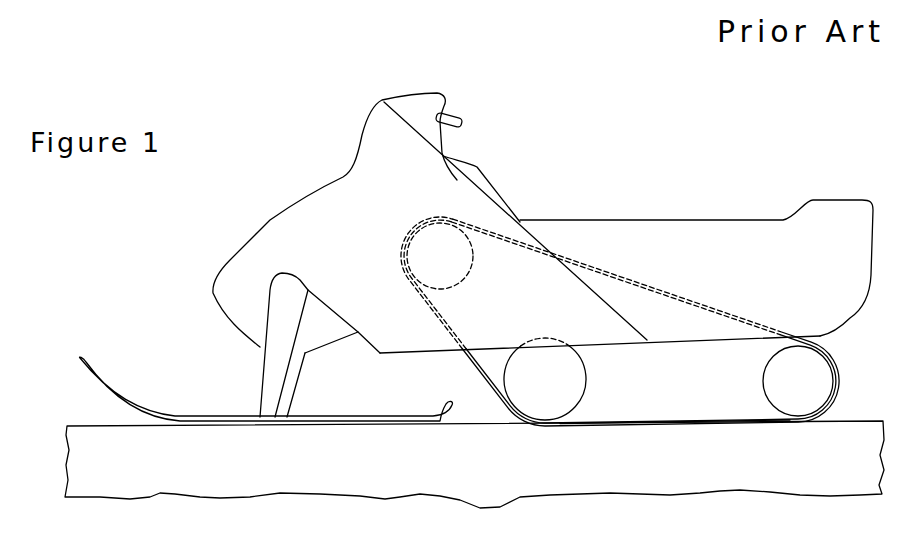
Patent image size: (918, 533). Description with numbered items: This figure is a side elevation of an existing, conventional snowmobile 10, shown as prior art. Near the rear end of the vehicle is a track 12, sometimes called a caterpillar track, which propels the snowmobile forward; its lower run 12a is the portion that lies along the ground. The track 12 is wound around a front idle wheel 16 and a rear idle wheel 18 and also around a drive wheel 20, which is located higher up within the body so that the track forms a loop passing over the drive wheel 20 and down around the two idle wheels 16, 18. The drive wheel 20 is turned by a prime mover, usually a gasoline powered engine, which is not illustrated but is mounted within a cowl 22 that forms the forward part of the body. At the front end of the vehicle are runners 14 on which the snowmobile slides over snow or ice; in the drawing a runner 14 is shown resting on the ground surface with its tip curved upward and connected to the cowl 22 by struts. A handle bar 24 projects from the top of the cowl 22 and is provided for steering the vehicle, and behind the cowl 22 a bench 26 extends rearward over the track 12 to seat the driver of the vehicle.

The snowmobile 10 is at (692, 146).
The track 12 is at (682, 295).
The ground-engaging lower run of track 12a is at (682, 415).
The runners 14 is at (118, 388).
The front idle wheel 16 is at (587, 373).
The rear idle wheel 18 is at (837, 375).
The drive wheel 20 is at (472, 262).
The cowl 22 is at (430, 220).
The handle bar 24 is at (460, 113).
The bench 26 is at (627, 220).